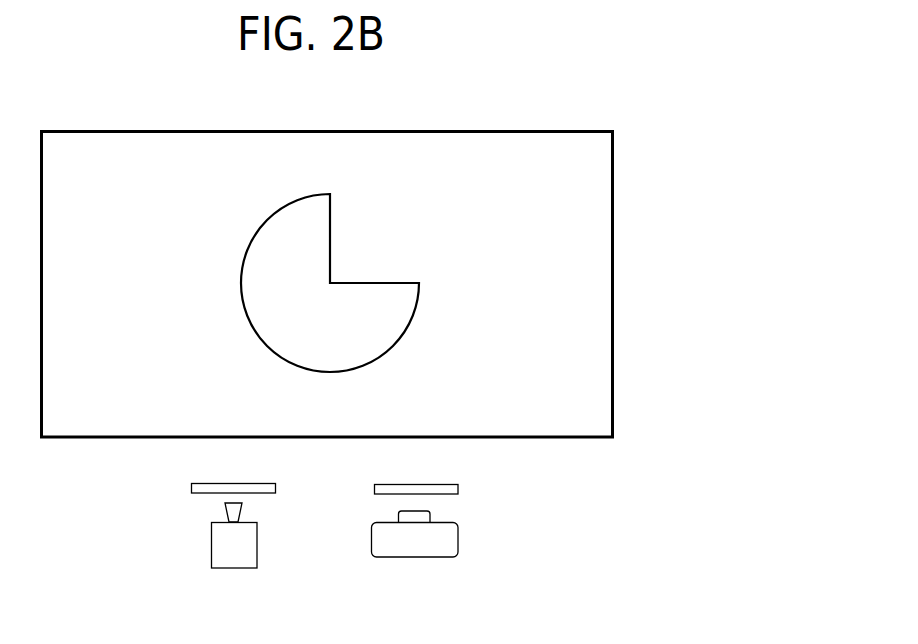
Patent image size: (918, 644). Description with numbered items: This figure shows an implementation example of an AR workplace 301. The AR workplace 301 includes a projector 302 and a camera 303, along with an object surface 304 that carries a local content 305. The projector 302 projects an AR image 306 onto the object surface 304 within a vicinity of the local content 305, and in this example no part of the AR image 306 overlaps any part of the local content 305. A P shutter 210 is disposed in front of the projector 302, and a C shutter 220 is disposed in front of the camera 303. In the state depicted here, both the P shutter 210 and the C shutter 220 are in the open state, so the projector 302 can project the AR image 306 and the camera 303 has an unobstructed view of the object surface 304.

The AR workplace 301 is at (361, 255).
The object surface 304 is at (327, 285).
The local content 305 is at (286, 301).
The AR image 306 is at (468, 229).
The P shutter 210 is at (161, 501).
The C shutter 220 is at (490, 501).
The projector 302 is at (235, 569).
The camera 303 is at (415, 572).